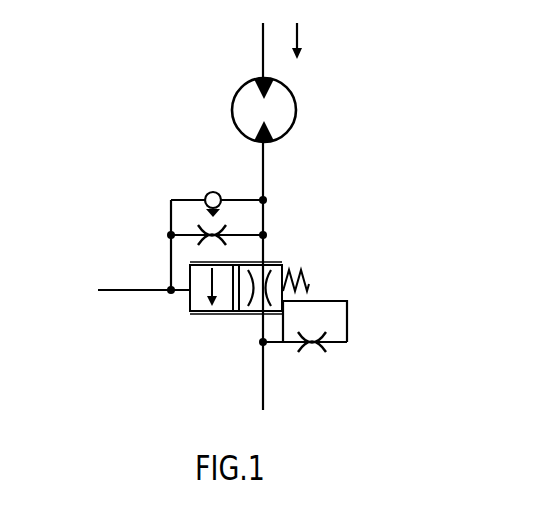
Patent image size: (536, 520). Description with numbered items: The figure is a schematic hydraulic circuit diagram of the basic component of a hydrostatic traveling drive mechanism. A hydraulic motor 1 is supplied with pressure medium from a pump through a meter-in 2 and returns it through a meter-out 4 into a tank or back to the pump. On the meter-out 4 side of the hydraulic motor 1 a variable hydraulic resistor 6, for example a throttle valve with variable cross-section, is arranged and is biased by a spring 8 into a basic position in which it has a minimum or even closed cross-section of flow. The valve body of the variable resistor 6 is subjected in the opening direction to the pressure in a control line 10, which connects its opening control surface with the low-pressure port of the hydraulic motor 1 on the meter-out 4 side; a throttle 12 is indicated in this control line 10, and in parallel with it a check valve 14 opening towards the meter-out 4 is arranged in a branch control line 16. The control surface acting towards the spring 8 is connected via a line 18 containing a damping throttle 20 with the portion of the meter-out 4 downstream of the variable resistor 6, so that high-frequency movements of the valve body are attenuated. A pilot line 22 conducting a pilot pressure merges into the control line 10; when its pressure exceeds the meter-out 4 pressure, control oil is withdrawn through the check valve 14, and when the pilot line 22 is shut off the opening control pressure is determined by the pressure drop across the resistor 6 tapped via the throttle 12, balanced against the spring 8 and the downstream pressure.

The hydraulic motor 1 is at (278, 108).
The meter-in 2 is at (263, 47).
The meter-out 4 is at (263, 167).
The variable hydraulic resistor 6 is at (280, 244).
The spring 8 is at (309, 283).
The control line 10 is at (168, 262).
The throttle 12 is at (196, 222).
The check valve 14 is at (210, 192).
The branch control line 16 is at (171, 197).
The line 18 is at (347, 322).
The damping throttle 20 is at (318, 348).
The pilot line 22 is at (137, 292).